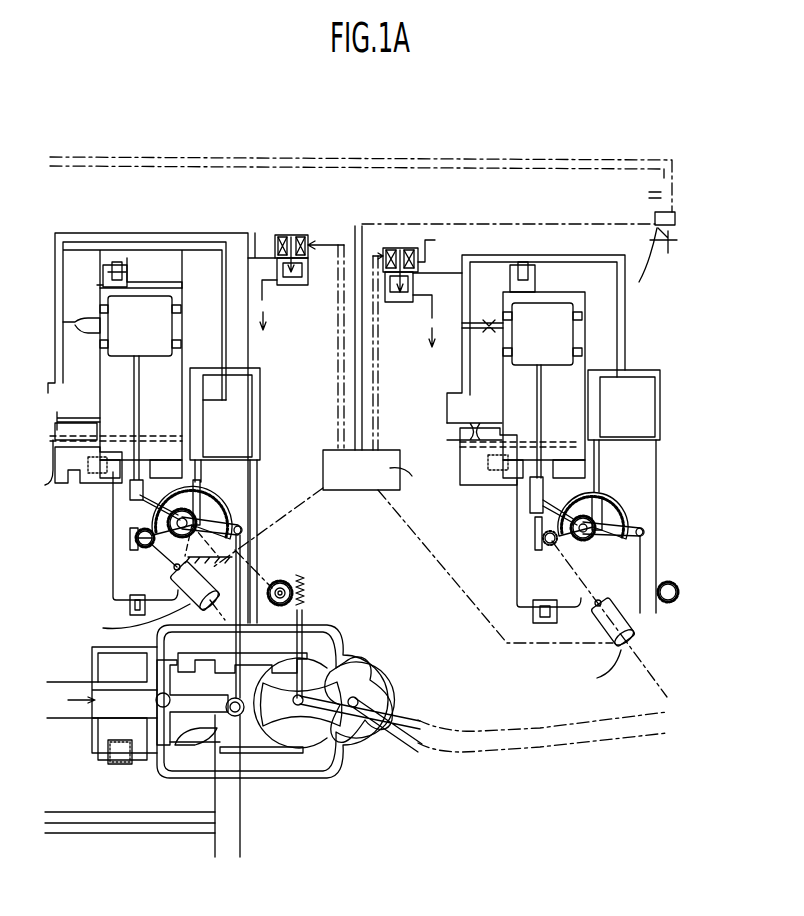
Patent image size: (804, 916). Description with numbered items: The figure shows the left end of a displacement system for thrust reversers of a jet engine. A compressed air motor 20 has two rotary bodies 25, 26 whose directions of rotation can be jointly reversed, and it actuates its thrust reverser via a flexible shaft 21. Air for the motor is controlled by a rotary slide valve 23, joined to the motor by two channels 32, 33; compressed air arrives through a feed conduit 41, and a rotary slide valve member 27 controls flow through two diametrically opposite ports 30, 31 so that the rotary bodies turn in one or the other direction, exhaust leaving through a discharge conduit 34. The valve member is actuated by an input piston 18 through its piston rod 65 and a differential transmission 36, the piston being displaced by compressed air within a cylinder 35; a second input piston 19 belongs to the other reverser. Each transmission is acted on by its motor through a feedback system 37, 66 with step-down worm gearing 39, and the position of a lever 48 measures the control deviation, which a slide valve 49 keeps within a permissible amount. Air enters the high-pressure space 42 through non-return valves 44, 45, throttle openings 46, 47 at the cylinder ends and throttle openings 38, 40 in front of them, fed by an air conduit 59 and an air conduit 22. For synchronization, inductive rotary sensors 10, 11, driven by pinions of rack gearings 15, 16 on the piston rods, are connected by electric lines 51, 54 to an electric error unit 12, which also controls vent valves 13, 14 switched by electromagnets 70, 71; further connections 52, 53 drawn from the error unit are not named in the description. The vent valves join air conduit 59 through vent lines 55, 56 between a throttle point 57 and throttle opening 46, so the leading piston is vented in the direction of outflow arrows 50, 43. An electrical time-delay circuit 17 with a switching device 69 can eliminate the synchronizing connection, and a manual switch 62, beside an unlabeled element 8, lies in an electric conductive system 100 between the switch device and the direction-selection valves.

The electric conductive system 100 is at (458, 156).
The manual switch 62 is at (628, 202).
The switch contact 8 is at (651, 192).
The switching device 69 is at (668, 253).
The vent line 55 is at (175, 233).
The air conduit 59 is at (84, 250).
The electromagnet 70 is at (272, 243).
The vent valve 13 is at (291, 236).
The outflow arrow 50 is at (266, 310).
The control line 53 is at (340, 314).
The electrical time-delay circuit 17 is at (356, 237).
The electric line 54 is at (376, 372).
The vent valve 14 is at (400, 247).
The electromagnet 71 is at (425, 240).
The vent line 56 is at (424, 270).
The outflow arrow 43 is at (430, 331).
The throttle opening 46 is at (103, 271).
The non-return valve 44 is at (128, 268).
The high-pressure space 42 is at (100, 286).
The input piston 18 is at (181, 334).
The cylinder 35 is at (182, 347).
The throttle opening 38 is at (90, 327).
The throttle opening 40 is at (97, 417).
The throttle point 57 is at (75, 418).
The piston rod 65 is at (140, 417).
The slide valve 49 is at (229, 432).
The air conduit 22 is at (57, 471).
The throttle opening 47 is at (100, 474).
The non-return valve 45 is at (92, 484).
The differential transmission 36 is at (241, 499).
The lever 48 is at (240, 527).
The rack gearing 15 is at (135, 545).
The inductive rotary sensor 10 is at (178, 578).
The feed conduit 41 is at (63, 718).
The feedback system 37 is at (266, 582).
The step-down worm gearing 39 is at (303, 575).
The electric error unit 12 is at (390, 482).
The electric line 51 is at (293, 515).
The signal line 52 is at (420, 546).
The input piston 19 is at (585, 322).
The rack gearing 16 is at (550, 543).
The feedback system 66 is at (638, 552).
The inductive rotary sensor 11 is at (617, 634).
The flexible shaft 21 is at (626, 733).
The compressed air motor 20 is at (374, 775).
The rotary body 26 is at (360, 660).
The rotary body 25 is at (278, 712).
The channel 32 is at (242, 650).
The channel 33 is at (236, 757).
The port 30 is at (163, 672).
The port 31 is at (182, 738).
The discharge conduit 34 is at (240, 813).
The rotary slide valve 23 is at (126, 674).
The rotary slide valve member 27 is at (130, 755).